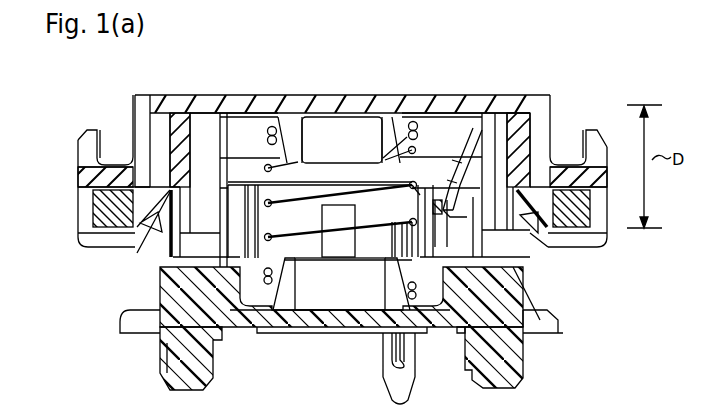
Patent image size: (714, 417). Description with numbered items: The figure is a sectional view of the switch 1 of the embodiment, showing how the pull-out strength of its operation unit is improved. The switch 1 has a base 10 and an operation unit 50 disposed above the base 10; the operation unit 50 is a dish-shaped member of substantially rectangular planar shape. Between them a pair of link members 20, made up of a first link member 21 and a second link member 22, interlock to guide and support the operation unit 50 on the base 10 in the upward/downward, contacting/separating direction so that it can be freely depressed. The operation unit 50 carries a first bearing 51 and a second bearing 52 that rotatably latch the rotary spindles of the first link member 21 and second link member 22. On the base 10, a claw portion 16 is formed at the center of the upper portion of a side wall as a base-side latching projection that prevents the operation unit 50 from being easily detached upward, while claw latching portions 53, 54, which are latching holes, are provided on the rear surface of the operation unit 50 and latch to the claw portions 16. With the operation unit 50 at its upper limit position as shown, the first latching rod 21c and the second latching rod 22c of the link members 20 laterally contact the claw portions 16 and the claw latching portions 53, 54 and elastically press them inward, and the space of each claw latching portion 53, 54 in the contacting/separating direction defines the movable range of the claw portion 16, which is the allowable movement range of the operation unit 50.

The switch 1 is at (622, 76).
The base 10 is at (548, 322).
The claw portion 16 is at (140, 225).
The link members 20 is at (343, 236).
The first link member 21 is at (615, 236).
The first latching rod 21c is at (585, 215).
The second link member 22 is at (71, 236).
The second latching rod 22c is at (112, 210).
The operation unit 50 is at (470, 101).
The first bearing 51 is at (565, 166).
The second bearing 52 is at (124, 188).
The claw latching portion 53 is at (528, 282).
The claw latching portion 54 is at (157, 282).